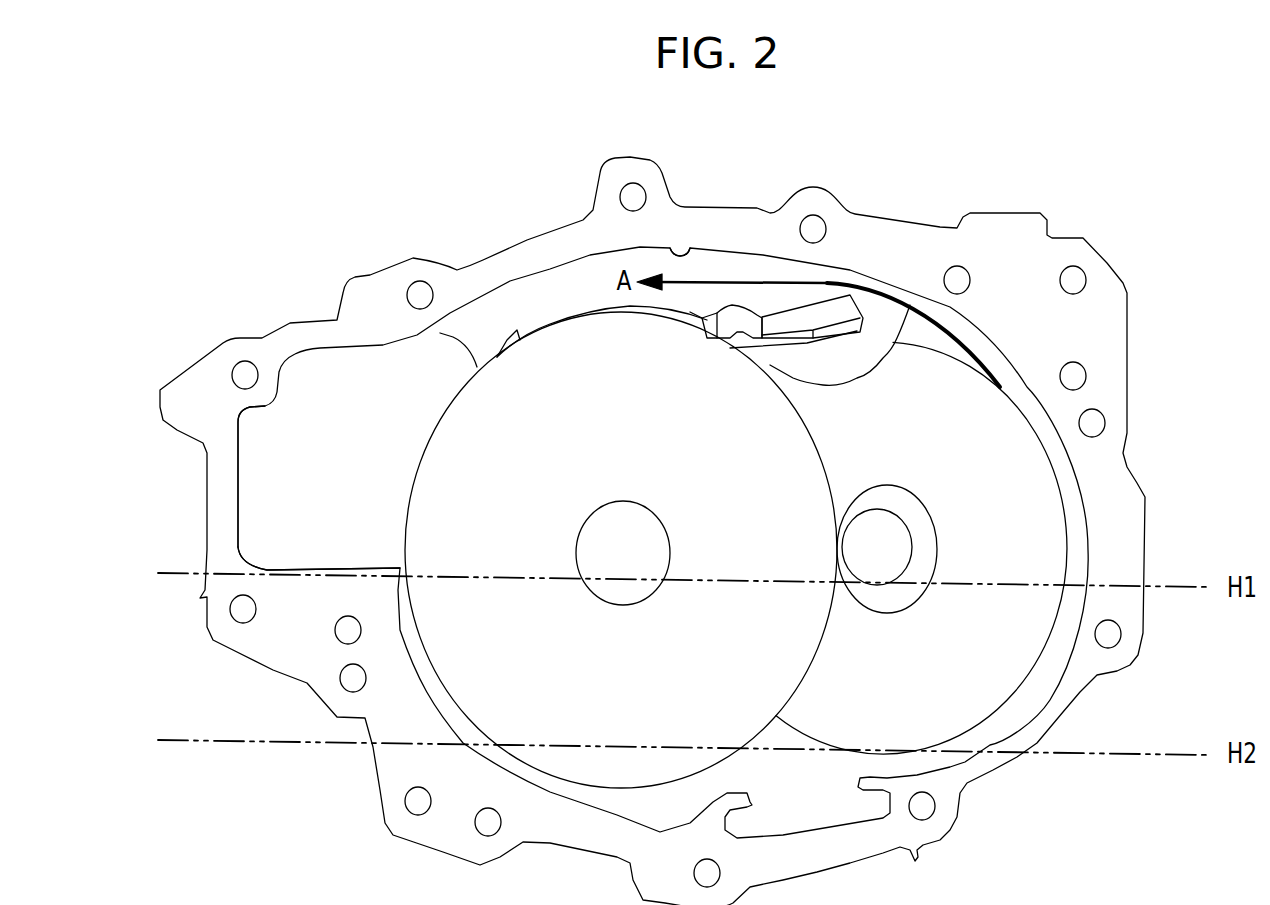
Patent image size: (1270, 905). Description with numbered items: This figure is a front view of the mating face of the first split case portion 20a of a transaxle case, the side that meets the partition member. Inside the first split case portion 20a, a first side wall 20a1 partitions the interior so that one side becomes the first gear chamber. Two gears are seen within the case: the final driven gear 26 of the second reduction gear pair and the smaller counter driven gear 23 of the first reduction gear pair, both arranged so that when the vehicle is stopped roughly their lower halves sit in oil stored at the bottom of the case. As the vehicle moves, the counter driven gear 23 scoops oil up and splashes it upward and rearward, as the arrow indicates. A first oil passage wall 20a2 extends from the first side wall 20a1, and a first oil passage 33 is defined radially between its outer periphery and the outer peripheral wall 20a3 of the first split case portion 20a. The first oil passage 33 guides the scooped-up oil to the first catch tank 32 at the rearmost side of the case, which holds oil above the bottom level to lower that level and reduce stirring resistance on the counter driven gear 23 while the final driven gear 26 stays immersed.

The first split case portion 20a is at (961, 196).
The first side wall 20a1 is at (910, 305).
The first oil passage wall 20a2 is at (827, 312).
The outer peripheral wall 20a3 is at (689, 253).
The counter driven gear 23 is at (978, 670).
The final driven gear 26 is at (552, 403).
The first catch tank 32 is at (323, 523).
The first oil passage 33 is at (763, 270).